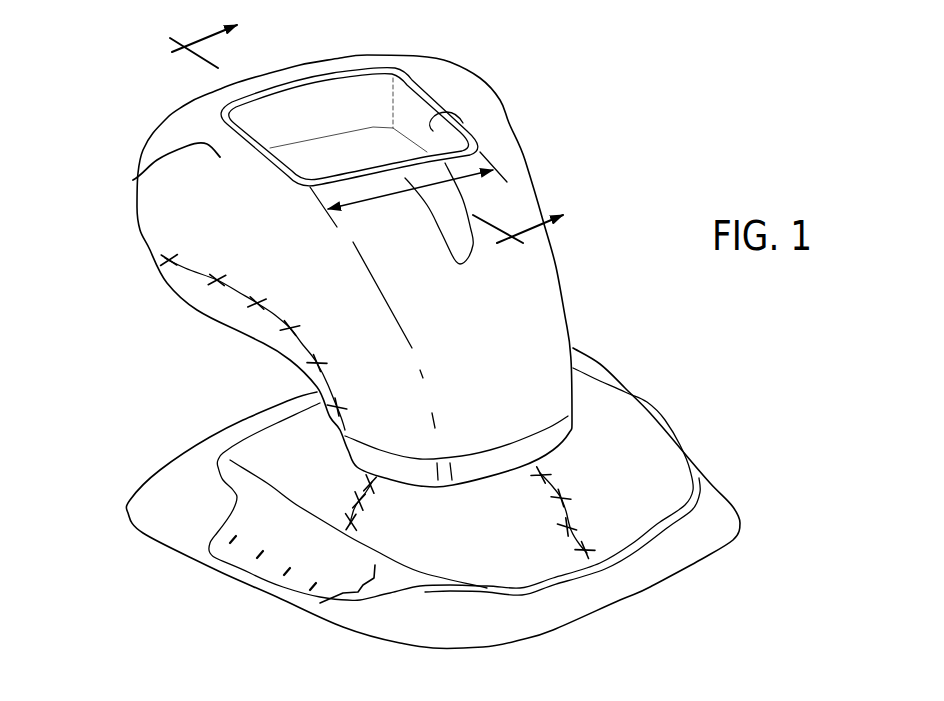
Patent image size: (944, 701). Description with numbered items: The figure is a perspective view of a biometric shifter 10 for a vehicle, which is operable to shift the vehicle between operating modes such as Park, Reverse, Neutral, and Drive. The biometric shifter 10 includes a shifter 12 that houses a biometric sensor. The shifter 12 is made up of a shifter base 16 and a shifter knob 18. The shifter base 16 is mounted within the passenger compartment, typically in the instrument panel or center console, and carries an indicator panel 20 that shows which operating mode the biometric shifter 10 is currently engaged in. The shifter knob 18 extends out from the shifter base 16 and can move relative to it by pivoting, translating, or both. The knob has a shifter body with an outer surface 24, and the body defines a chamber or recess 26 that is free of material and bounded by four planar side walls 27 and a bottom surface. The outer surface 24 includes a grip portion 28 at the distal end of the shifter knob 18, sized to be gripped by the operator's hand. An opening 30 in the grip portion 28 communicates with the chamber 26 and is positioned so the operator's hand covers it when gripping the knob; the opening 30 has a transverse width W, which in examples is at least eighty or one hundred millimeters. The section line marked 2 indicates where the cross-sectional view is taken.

The biometric shifter 10 is at (617, 62).
The shifter 12 is at (200, 385).
The shifter base 16 is at (661, 432).
The shifter knob 18 is at (557, 308).
The indicator panel 20 is at (363, 585).
The outer surface 24 is at (448, 86).
The chamber or recess 26 is at (314, 108).
The planar side walls 27 is at (271, 106).
The grip portion 28 is at (133, 180).
The opening 30 is at (433, 131).
The section line 2- 2 is at (353, 152).
The transverse width W is at (493, 170).